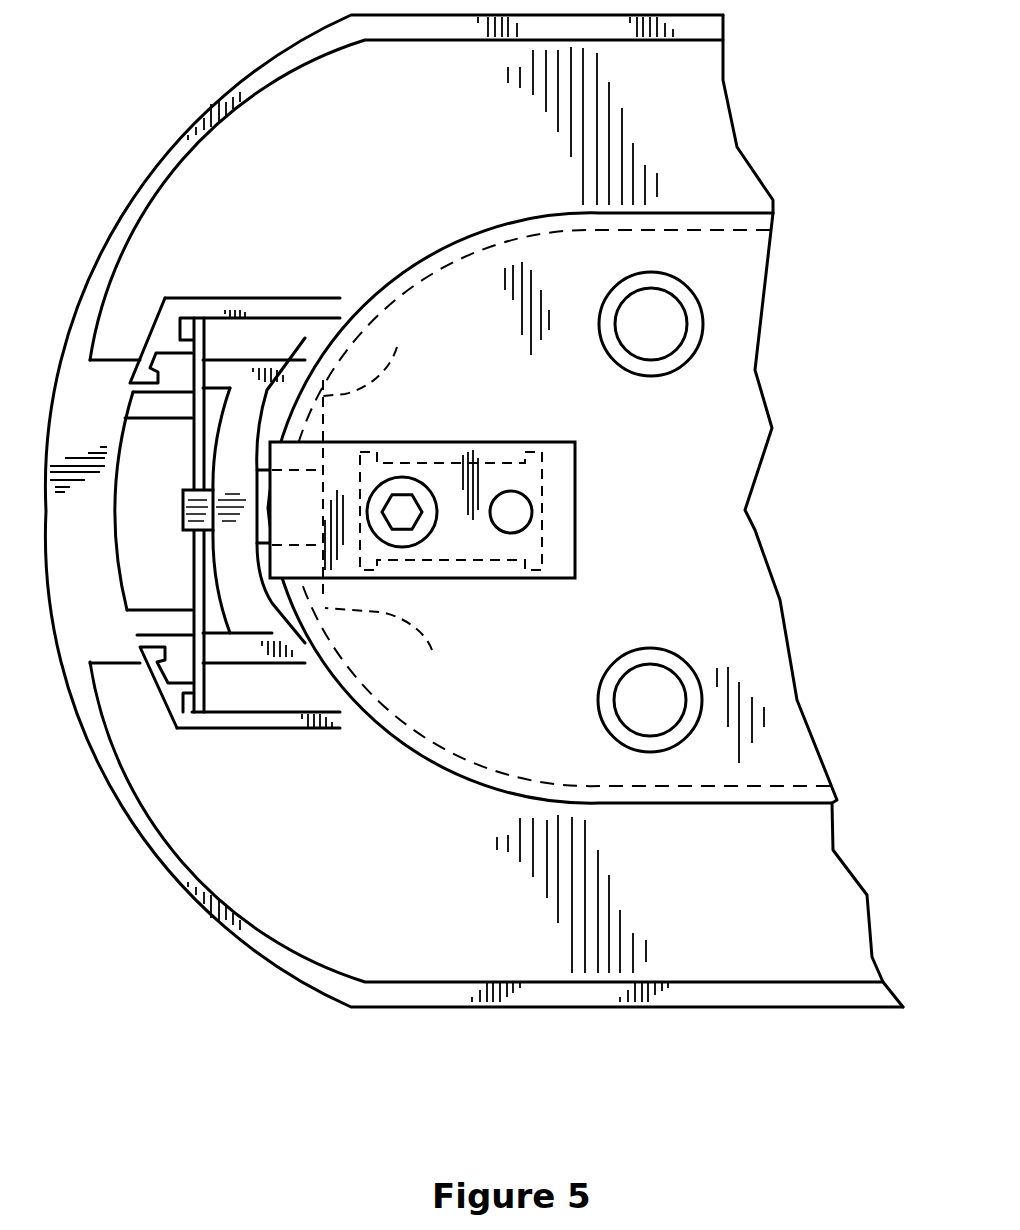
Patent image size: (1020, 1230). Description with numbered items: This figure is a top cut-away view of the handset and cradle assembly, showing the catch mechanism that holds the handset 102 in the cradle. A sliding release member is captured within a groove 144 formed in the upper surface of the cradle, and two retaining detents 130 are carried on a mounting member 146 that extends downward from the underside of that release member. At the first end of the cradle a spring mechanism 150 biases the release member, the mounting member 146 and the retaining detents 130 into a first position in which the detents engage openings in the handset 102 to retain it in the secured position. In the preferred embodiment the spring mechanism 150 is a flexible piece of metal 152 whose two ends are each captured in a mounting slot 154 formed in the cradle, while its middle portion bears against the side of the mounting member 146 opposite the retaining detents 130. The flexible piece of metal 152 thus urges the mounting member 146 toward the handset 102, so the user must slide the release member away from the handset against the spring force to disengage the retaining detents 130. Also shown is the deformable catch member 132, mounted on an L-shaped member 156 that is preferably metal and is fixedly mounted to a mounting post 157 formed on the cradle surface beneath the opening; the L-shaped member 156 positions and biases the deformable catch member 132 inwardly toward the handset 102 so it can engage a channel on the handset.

The handset 102 is at (684, 538).
The retaining detents 130 is at (422, 490).
The deformable catch member 132 is at (344, 422).
The groove 144 is at (167, 622).
The mounting member 146 is at (237, 400).
The spring mechanism 150 is at (163, 513).
The flexible piece of metal 152 is at (193, 563).
The mounting slot 154 is at (240, 298).
The L-shaped member 156 is at (487, 560).
The mounting post 157 is at (408, 508).